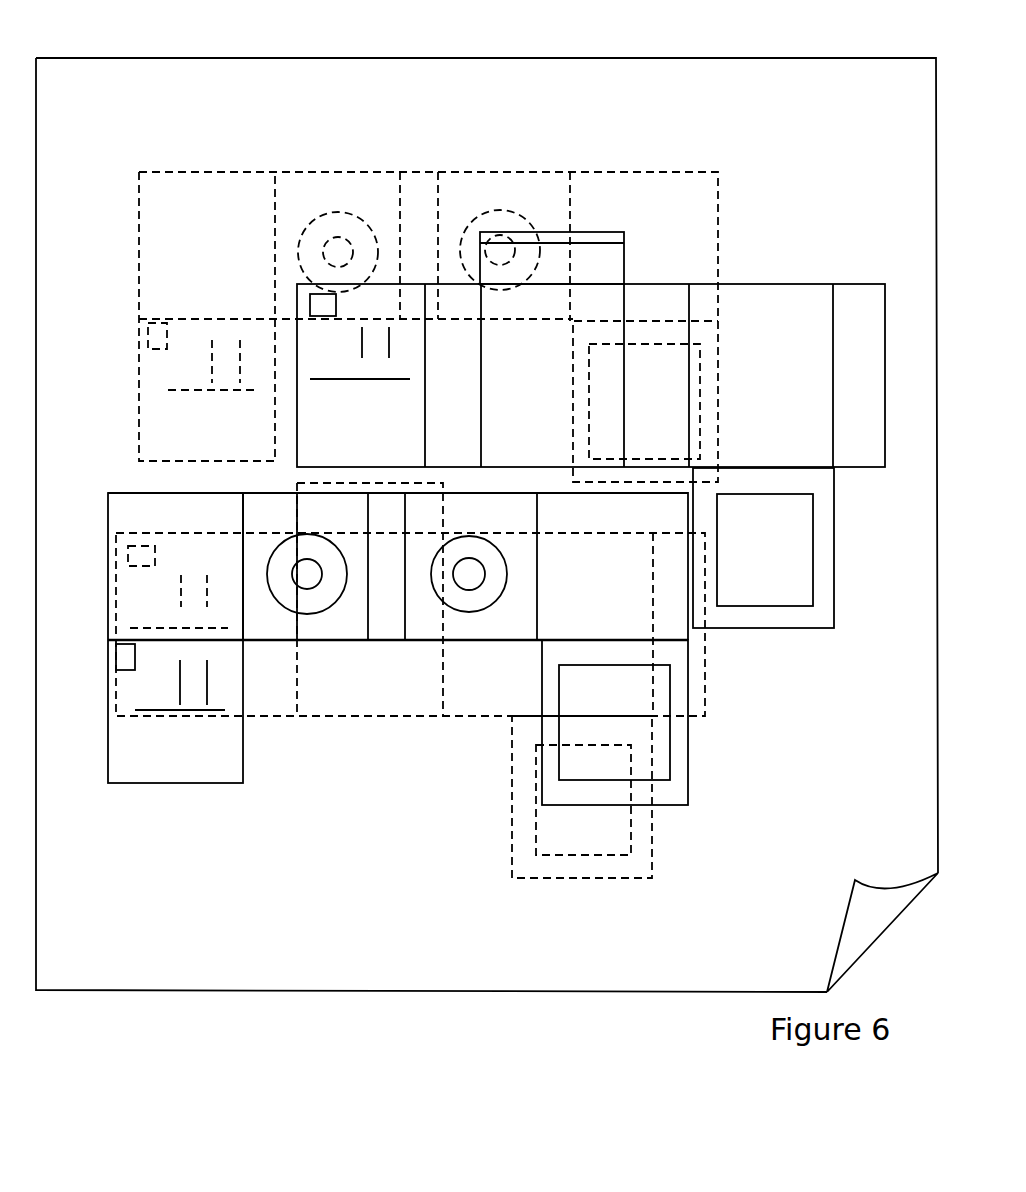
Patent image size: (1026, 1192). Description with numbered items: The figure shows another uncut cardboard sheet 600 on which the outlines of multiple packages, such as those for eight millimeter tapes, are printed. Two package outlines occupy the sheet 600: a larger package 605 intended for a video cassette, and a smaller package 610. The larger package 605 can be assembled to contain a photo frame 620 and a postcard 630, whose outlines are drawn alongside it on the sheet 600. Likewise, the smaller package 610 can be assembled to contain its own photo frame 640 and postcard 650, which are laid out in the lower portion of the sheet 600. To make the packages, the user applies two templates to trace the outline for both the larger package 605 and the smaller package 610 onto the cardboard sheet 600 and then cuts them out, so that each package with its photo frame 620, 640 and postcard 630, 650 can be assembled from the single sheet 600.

The sheet 600 is at (486, 70).
The larger package 605 is at (590, 236).
The smaller package 610 is at (345, 668).
The photo frame 620 is at (778, 612).
The postcard 630 is at (383, 345).
The photo frame 640 is at (645, 778).
The postcard 650 is at (157, 765).